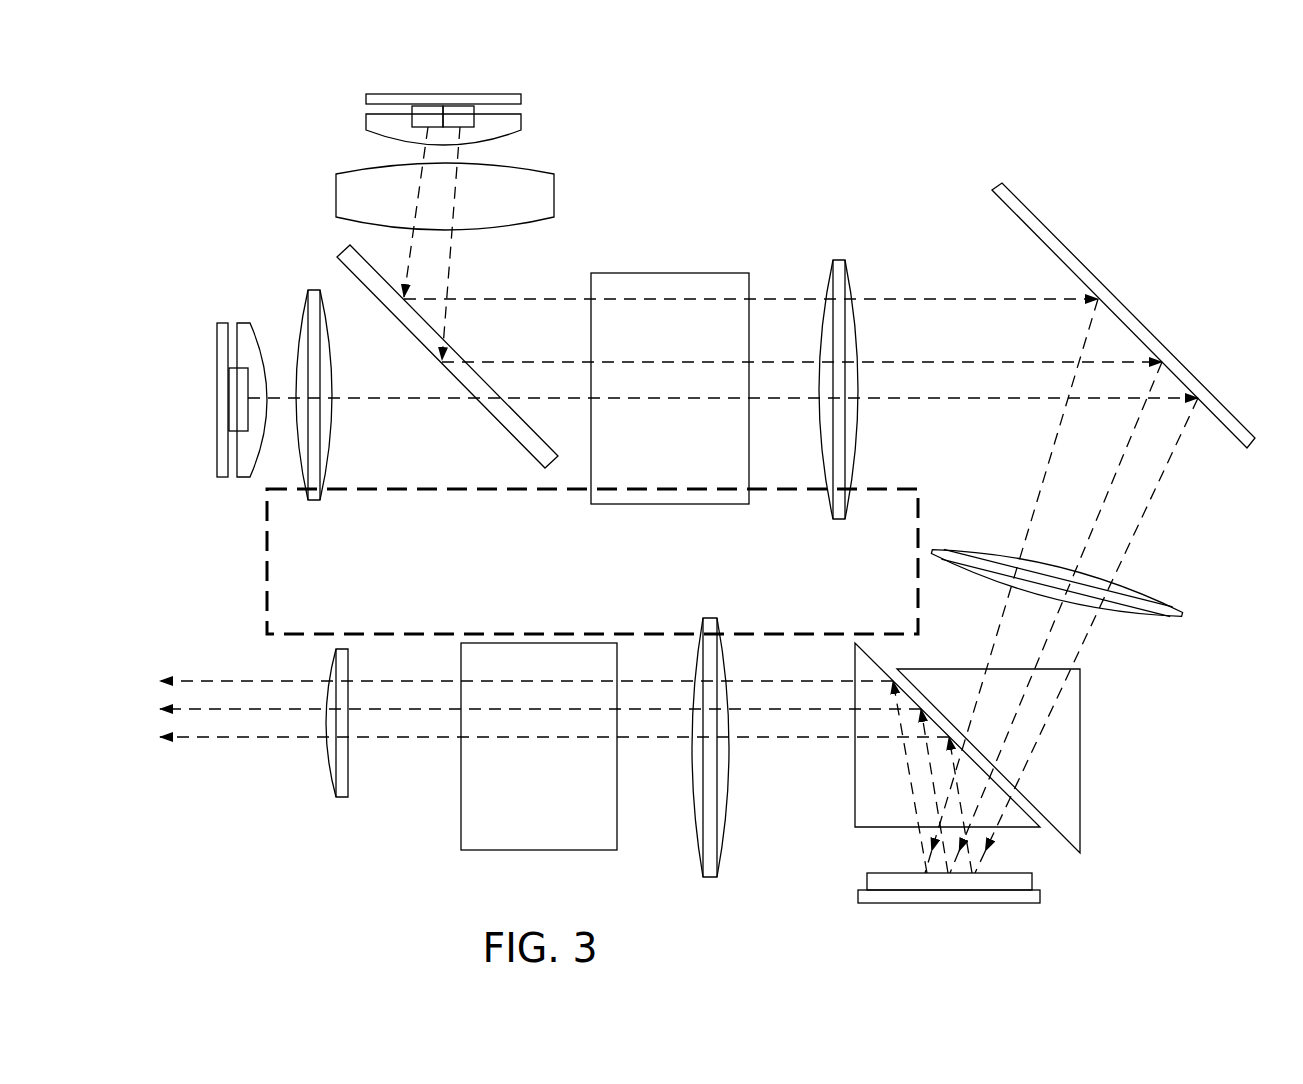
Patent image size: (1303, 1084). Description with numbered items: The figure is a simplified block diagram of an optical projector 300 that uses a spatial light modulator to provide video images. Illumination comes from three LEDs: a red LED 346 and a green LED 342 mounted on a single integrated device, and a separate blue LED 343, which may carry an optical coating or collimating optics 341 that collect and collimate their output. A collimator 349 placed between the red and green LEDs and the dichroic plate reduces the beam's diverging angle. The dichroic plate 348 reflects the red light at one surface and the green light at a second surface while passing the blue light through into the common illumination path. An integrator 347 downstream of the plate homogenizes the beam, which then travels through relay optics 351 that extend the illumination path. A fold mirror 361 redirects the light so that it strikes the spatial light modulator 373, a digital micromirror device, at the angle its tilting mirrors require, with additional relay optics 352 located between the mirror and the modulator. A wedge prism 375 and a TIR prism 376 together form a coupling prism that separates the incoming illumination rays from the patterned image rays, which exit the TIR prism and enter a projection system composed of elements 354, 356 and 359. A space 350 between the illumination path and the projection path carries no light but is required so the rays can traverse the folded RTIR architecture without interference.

The optical projector 300 is at (1108, 119).
The collimating optics 341 is at (366, 122).
The green LED 342 is at (465, 106).
The blue LED 343 is at (240, 385).
The red LED 346 is at (425, 106).
The integrator 347 is at (668, 273).
The dichroic plate 348 is at (497, 422).
The collimator 349 is at (336, 192).
The space 350 is at (267, 575).
The relay optics 351 is at (838, 260).
The relay optics 352 is at (1182, 615).
The projection system element 354 is at (710, 877).
The projection system element 356 is at (540, 850).
The projection system element 359 is at (340, 797).
The fold mirror 361 is at (1048, 232).
The spatial light modulator 373 is at (950, 903).
The wedge prism 375 is at (1080, 762).
The TIR prism 376 is at (855, 797).